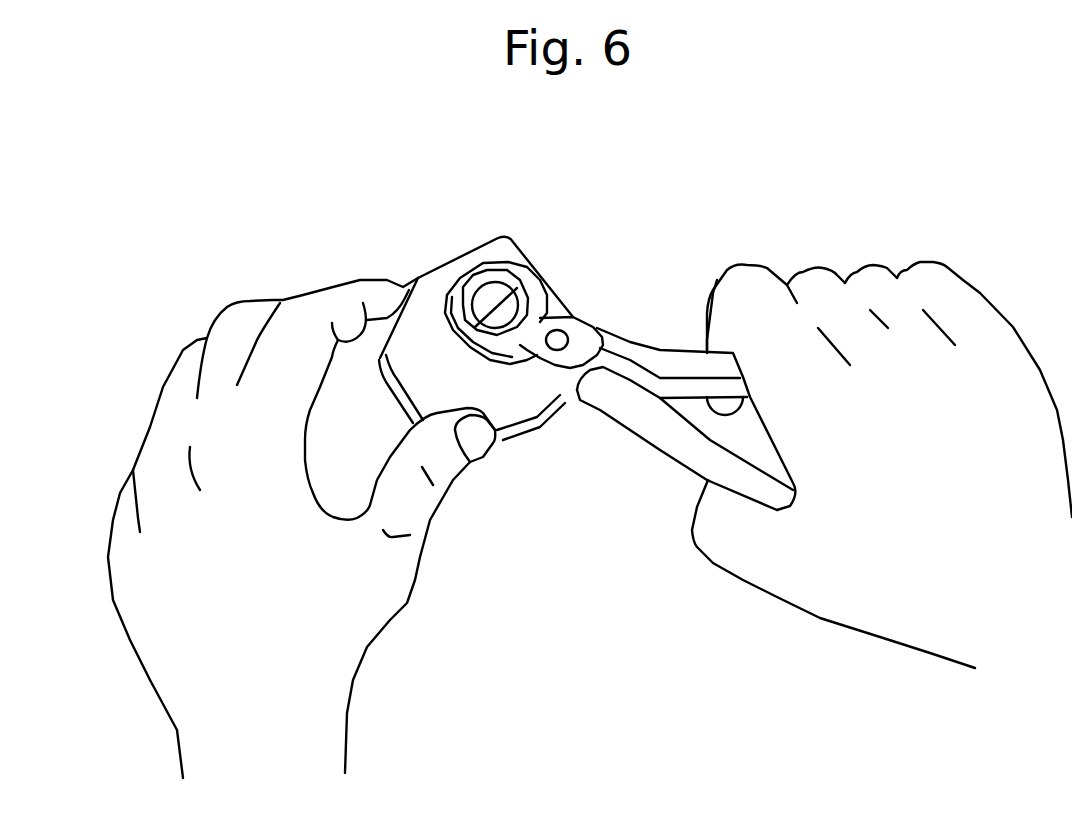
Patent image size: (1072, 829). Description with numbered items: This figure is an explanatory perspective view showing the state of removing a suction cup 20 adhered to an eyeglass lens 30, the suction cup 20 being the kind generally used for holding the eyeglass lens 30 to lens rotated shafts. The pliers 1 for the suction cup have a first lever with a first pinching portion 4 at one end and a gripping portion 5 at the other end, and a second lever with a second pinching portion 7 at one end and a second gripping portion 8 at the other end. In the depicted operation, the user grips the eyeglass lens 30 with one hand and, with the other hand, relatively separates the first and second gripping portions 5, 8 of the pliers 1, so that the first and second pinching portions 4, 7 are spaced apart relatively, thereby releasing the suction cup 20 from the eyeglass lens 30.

The pliers for suction cup 1 is at (618, 325).
The first pinching portion 4 is at (447, 300).
The gripping portion 5 is at (693, 355).
The second pinching portion 7 is at (496, 288).
The second gripping portion 8 is at (640, 427).
The suction cup 20 is at (497, 320).
The eyeglass lens 30 is at (467, 250).